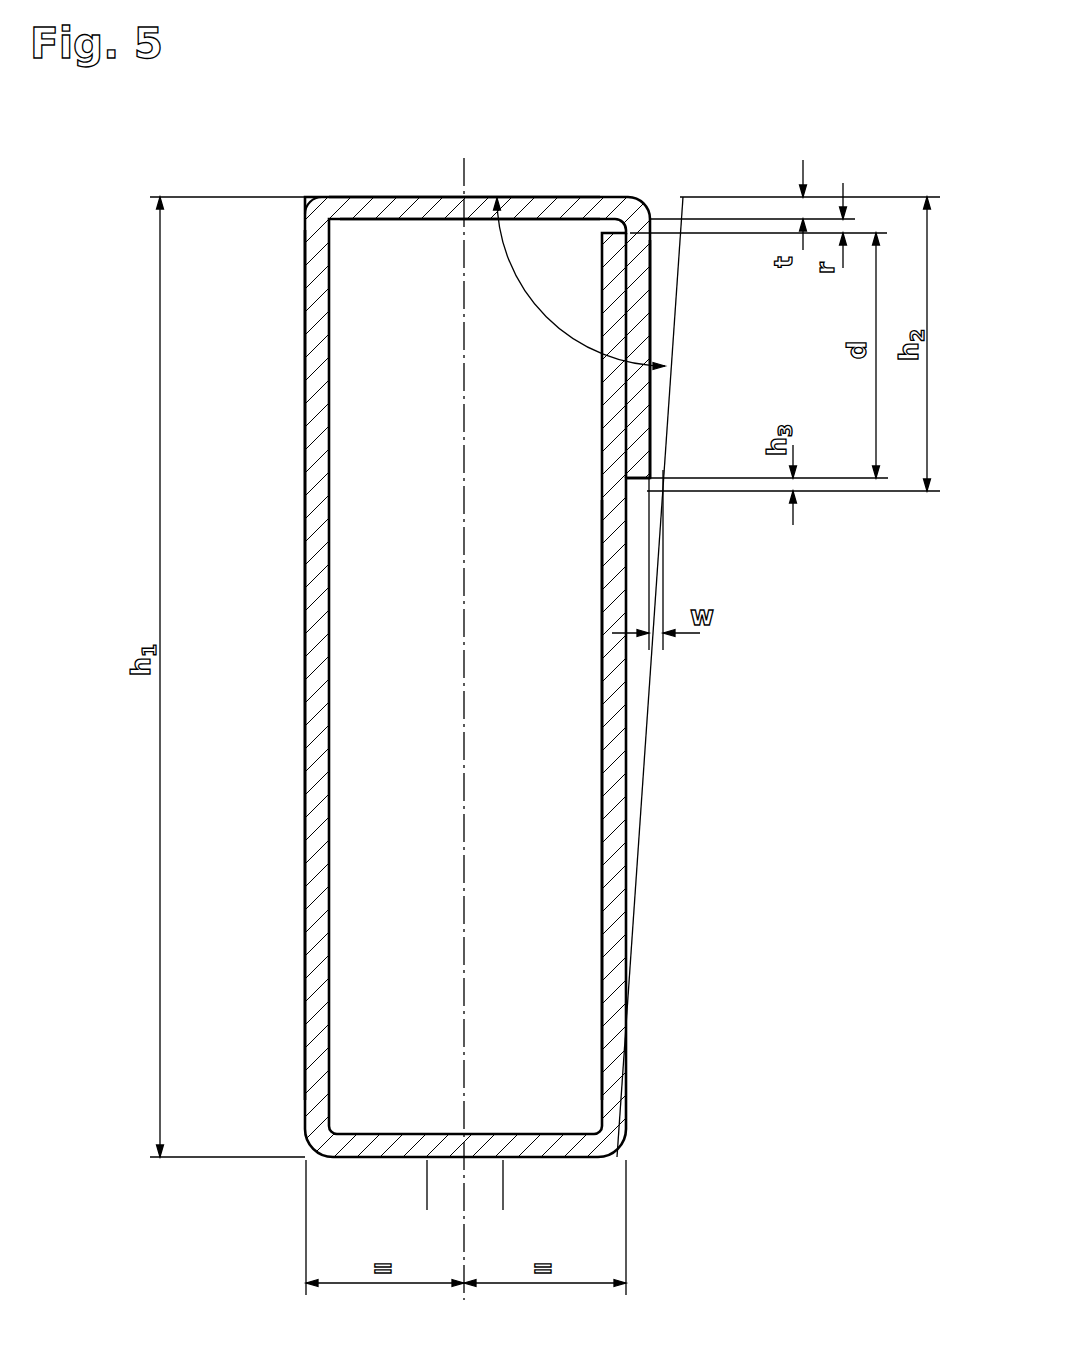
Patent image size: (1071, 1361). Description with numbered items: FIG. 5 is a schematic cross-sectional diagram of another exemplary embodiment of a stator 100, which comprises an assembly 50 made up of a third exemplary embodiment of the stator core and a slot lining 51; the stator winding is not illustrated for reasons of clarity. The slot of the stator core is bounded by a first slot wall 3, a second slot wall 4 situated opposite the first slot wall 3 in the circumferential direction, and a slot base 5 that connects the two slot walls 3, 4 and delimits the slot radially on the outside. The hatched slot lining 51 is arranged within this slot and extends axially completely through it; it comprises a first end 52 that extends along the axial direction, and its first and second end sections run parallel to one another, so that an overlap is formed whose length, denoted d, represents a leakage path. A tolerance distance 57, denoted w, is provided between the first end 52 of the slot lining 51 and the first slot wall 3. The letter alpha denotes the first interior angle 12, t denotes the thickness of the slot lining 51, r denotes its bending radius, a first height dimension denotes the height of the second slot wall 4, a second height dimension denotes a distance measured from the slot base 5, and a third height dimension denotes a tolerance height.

The assembly 50 is at (262, 105).
The stator 100 is at (825, 107).
The slot base 5 is at (443, 228).
The slot lining 51 is at (382, 212).
The second slot wall 4 is at (328, 472).
The first slot wall 3 is at (627, 730).
The tolerance distance 57 is at (660, 458).
The first end 52 is at (633, 480).
The first interior angle 12 is at (528, 297).